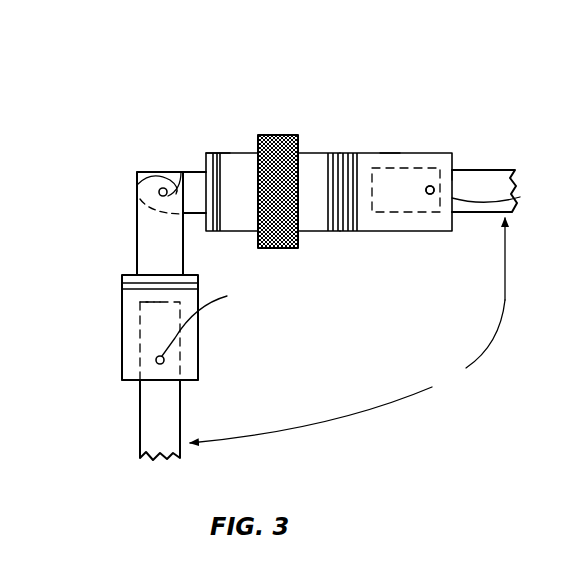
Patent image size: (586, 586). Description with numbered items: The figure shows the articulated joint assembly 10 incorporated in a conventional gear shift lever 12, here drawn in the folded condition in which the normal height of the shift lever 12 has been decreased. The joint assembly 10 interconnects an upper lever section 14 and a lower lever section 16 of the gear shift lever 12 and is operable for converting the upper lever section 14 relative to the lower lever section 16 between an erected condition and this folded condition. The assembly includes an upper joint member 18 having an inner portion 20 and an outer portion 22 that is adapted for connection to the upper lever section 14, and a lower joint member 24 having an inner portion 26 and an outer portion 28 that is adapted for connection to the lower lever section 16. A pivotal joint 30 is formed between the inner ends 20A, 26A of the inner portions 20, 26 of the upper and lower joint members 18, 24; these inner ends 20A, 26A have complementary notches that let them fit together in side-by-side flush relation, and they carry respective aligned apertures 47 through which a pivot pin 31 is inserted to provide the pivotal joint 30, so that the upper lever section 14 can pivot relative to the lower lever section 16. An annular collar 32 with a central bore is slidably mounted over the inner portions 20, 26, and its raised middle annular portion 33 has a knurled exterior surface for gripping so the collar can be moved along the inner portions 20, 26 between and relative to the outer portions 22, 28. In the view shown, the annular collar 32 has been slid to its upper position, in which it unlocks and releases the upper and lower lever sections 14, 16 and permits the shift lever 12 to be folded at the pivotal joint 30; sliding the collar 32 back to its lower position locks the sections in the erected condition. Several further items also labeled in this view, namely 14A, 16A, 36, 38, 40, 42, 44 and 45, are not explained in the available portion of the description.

The articulated joint assembly 10 is at (225, 128).
The gear shift lever 12 is at (347, 330).
The upper lever section 14 is at (486, 170).
The cable conductor end 14A is at (373, 152).
The lower lever section 16 is at (140, 434).
The tube conductor end 16A is at (140, 348).
The upper joint member 18 is at (392, 148).
The inner portion of upper joint member 20 is at (197, 205).
The inner end of upper joint member inner portion 20A is at (133, 172).
The outer portion of upper joint member 22 is at (400, 233).
The lower joint member 24 is at (203, 331).
The inner portion of lower joint member 26 is at (137, 258).
The inner end of lower joint member inner portion 26A is at (145, 215).
The outer portion of lower joint member 28 is at (198, 365).
The pivotal joint 30 is at (157, 165).
The pivot pin 31 is at (140, 195).
The annular collar 32 is at (319, 150).
The raised middle annular portion 33 is at (276, 134).
The terminal 36 is at (431, 182).
The housing top wall 38 is at (135, 312).
The cable junction 40 is at (453, 168).
The housing bottom wall 42 is at (128, 382).
The conductor wire 44 is at (520, 197).
The solder joint 45 is at (431, 194).
The apertures 47 is at (181, 172).